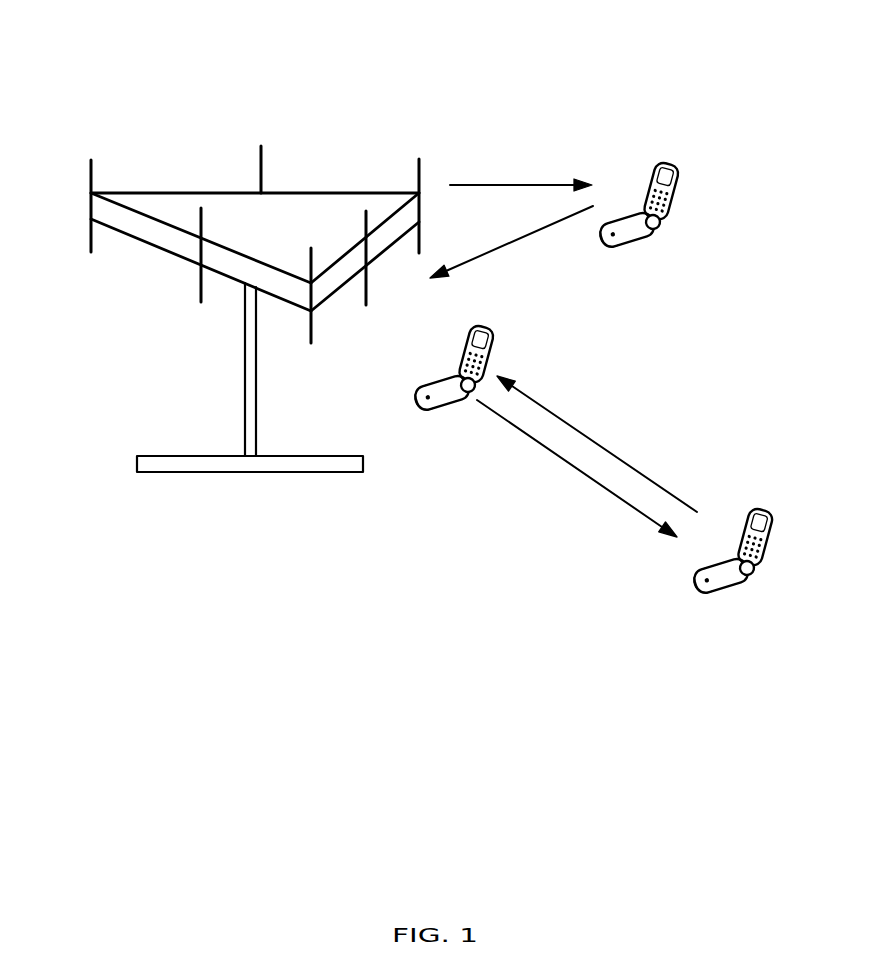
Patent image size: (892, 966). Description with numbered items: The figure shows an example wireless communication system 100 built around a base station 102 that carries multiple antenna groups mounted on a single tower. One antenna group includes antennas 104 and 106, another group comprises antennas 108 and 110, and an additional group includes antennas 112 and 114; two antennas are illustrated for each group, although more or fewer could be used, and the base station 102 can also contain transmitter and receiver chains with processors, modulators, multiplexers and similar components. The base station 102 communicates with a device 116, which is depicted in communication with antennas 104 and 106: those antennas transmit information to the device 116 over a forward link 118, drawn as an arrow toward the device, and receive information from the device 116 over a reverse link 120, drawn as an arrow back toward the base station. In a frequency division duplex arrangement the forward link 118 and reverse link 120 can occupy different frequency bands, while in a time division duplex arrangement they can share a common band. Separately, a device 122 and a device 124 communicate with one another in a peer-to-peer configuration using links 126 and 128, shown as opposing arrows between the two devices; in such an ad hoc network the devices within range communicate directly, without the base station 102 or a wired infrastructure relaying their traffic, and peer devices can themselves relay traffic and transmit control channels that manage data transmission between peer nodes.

The wireless communication system 100 is at (757, 62).
The base station 102 is at (293, 472).
The antenna 104 is at (419, 160).
The antenna 106 is at (366, 302).
The antenna 108 is at (311, 340).
The antenna 110 is at (201, 299).
The antenna 112 is at (91, 161).
The antenna 114 is at (261, 148).
The device 116 is at (653, 163).
The forward link 118 is at (503, 185).
The reverse link 120 is at (502, 246).
The device 122 is at (482, 325).
The device 124 is at (753, 507).
The link 126 is at (582, 475).
The link 128 is at (585, 437).